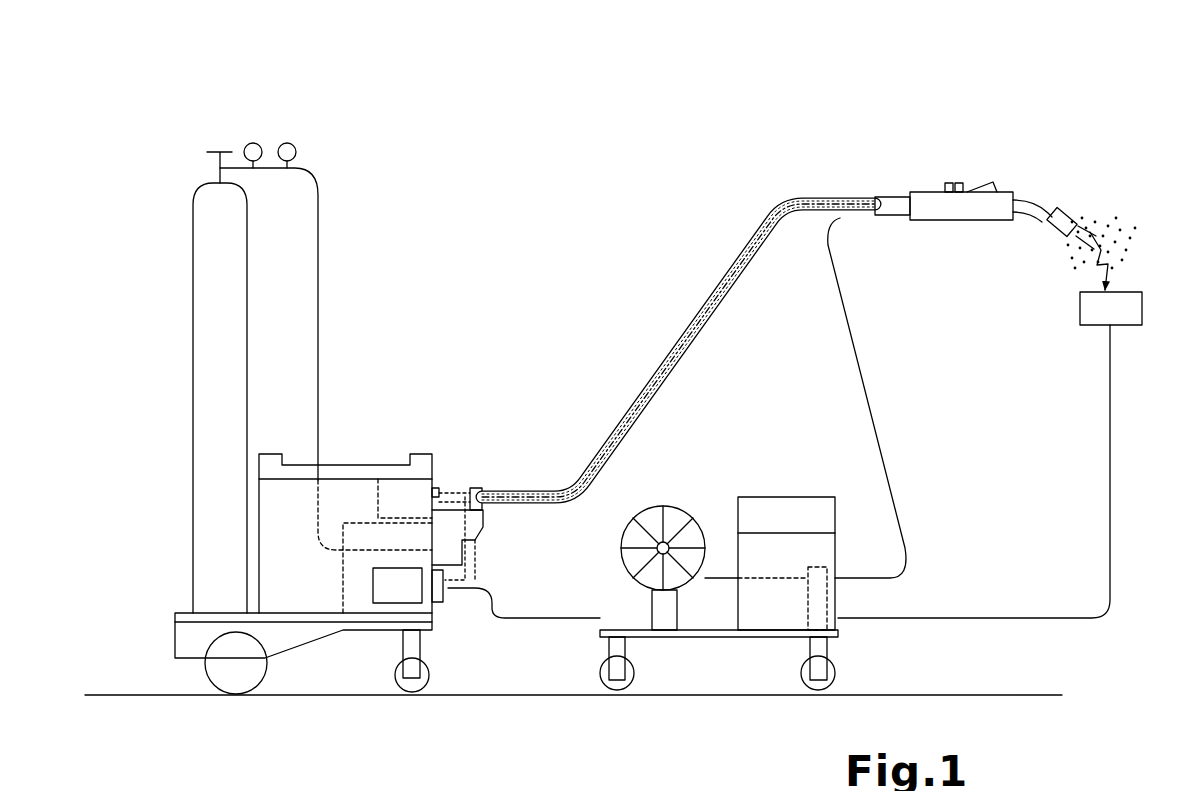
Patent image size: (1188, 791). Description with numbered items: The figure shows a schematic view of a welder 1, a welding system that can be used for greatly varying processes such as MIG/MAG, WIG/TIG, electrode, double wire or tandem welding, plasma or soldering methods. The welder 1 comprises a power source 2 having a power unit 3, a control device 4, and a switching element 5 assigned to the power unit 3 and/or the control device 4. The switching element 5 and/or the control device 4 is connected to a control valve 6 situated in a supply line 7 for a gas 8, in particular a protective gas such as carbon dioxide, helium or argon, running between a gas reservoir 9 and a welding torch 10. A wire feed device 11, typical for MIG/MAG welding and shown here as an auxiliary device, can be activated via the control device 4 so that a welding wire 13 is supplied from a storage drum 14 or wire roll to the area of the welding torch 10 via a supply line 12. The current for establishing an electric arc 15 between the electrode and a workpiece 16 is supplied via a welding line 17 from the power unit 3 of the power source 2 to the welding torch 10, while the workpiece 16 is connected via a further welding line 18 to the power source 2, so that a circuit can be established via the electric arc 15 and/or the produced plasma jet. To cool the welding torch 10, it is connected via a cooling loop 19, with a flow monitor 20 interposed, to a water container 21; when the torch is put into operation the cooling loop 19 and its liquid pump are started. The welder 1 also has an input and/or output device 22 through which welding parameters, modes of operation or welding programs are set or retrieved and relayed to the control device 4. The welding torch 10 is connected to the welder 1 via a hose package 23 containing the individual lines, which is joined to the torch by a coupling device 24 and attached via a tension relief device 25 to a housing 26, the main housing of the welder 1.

The welder 1 is at (155, 138).
The power source 2 is at (388, 347).
The power unit 3 is at (392, 592).
The control device 4 is at (342, 580).
The switching element 5 is at (445, 615).
The control valve 6 is at (443, 562).
The supply line 7 is at (812, 213).
The gas 8 is at (1082, 197).
The gas reservoir 9 is at (220, 258).
The welding torch 10 is at (1003, 165).
The wire feed device 11 is at (880, 658).
The supply line 12 is at (872, 420).
The welding wire 13 is at (742, 580).
The storage drum 14 is at (672, 517).
The electric arc 15 is at (1078, 280).
The workpiece 16 is at (1117, 306).
The welding line 17 is at (745, 252).
The further welding line 18 is at (1111, 490).
The cooling loop 19 is at (753, 237).
The flow monitor 20 is at (460, 493).
The water container 21 is at (397, 490).
The input and/or output device 22 is at (425, 479).
The hose package 23 is at (760, 183).
The coupling device 24 is at (888, 197).
The tension relief device 25 is at (485, 510).
The housing 26 is at (250, 490).